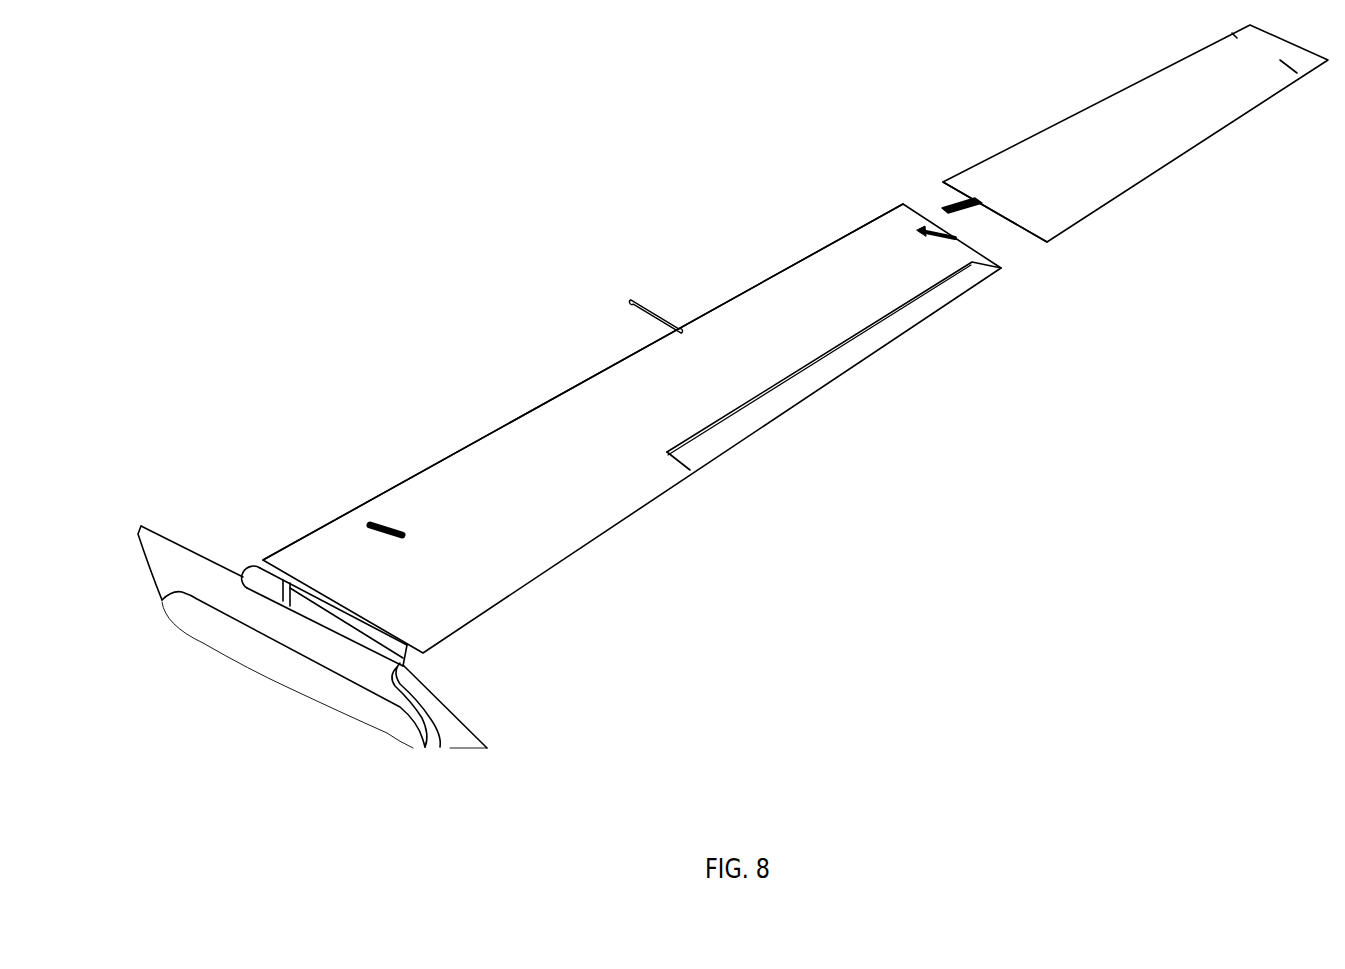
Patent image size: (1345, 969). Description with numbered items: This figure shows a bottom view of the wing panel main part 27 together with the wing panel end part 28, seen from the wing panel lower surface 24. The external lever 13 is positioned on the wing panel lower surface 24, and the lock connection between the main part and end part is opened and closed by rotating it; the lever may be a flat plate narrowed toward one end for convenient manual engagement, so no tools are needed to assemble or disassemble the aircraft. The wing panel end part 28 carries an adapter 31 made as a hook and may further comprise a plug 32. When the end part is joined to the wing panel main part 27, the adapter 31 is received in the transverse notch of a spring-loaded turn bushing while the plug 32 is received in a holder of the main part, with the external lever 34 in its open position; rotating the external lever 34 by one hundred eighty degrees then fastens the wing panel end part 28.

The external lever 13 is at (383, 527).
The wing panel lower surface 24 is at (585, 467).
The wing panel main part 27 is at (733, 296).
The wing panel end part 28 is at (1163, 167).
The adapter of the wing panel end part 31 is at (947, 188).
The plug 32 is at (946, 210).
The external lever 34 is at (930, 242).